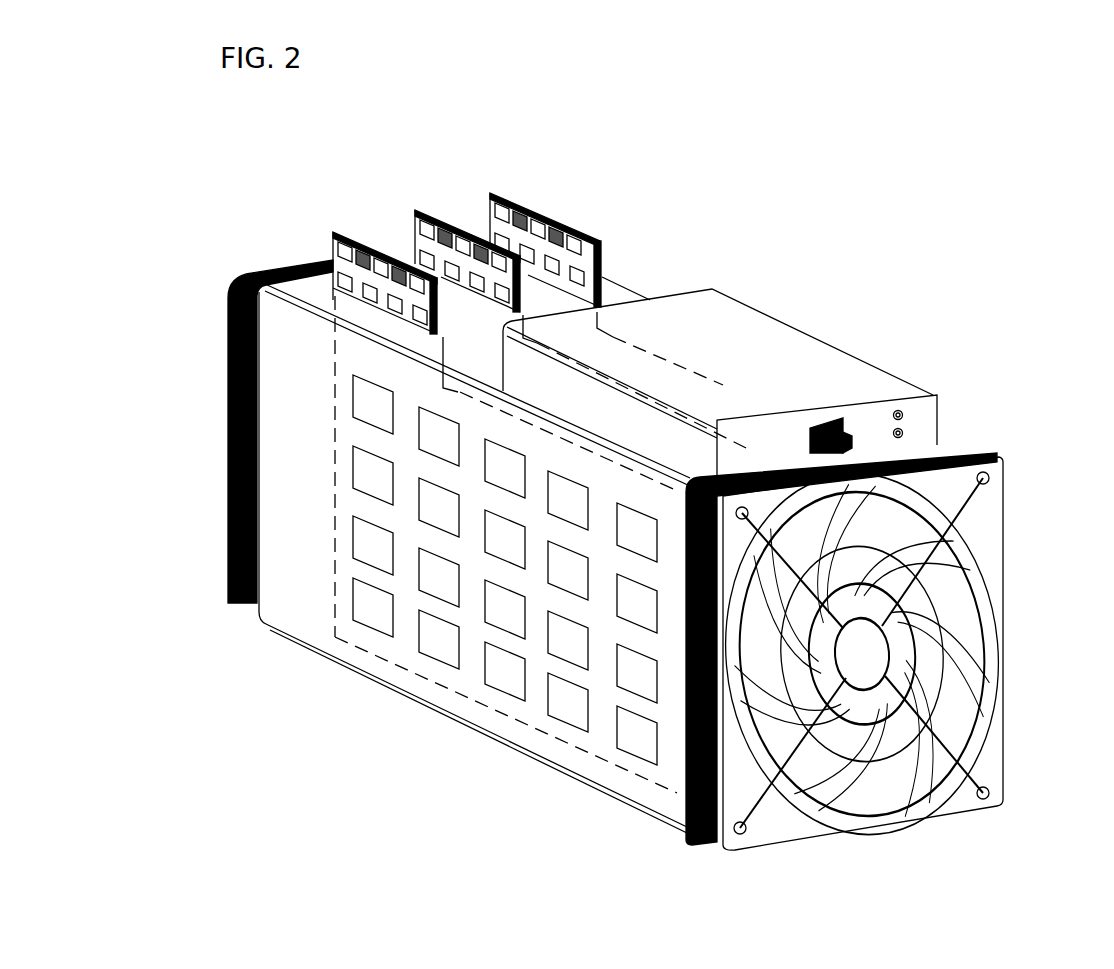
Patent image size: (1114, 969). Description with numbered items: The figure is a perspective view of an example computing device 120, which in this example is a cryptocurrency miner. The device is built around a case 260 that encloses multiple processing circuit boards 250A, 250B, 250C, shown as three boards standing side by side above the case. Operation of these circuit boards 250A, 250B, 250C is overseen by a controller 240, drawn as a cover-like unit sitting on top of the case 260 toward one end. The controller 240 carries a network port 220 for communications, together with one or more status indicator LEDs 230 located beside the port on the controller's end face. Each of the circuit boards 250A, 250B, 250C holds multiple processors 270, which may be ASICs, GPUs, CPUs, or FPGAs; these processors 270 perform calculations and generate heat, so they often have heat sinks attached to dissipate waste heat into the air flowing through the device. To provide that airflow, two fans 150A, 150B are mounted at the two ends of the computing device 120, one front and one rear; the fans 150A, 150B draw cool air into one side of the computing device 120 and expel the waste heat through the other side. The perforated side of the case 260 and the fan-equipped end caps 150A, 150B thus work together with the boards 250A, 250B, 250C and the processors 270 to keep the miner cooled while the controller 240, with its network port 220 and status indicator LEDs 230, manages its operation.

The computing device 120 is at (872, 254).
The fan 150A is at (997, 454).
The fan 150B is at (237, 281).
The network port 220 is at (832, 418).
The status indicator LEDs 230 is at (904, 431).
The controller 240 is at (718, 292).
The processing circuit board 250A is at (343, 234).
The processing circuit board 250B is at (433, 213).
The processing circuit board 250C is at (498, 198).
The case 260 is at (443, 717).
The processors 270 is at (377, 633).